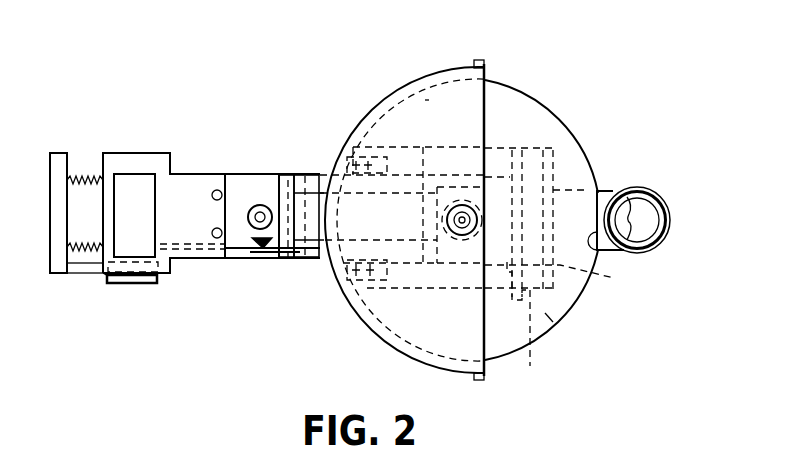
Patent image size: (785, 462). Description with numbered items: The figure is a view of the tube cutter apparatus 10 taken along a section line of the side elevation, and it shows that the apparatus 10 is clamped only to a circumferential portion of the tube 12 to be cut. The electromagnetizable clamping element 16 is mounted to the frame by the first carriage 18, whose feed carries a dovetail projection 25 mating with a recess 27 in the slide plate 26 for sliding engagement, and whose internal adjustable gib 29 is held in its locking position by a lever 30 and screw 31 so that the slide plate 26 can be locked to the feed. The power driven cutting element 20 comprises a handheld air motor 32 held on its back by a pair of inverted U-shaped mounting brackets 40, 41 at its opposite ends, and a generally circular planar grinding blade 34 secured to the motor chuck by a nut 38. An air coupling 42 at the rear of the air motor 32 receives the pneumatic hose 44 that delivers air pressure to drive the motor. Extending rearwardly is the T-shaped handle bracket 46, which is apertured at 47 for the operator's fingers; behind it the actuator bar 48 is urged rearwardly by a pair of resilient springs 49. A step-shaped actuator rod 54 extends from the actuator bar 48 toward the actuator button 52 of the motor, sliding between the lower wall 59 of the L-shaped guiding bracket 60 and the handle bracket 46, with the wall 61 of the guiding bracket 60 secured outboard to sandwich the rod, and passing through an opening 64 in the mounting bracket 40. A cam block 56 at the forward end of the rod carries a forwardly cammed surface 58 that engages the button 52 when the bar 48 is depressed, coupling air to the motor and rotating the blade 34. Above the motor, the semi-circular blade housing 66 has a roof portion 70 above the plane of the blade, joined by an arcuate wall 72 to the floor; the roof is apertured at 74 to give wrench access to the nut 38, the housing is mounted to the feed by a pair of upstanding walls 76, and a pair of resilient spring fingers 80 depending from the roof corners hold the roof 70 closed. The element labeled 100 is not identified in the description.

The tube cutter apparatus 10 is at (319, 42).
The tube 12 is at (663, 200).
The electromagnetizable clamping element 16 is at (607, 187).
The first carriage 18 is at (565, 125).
The power driven cutting element 20 is at (516, 58).
The dovetail projection 25 is at (570, 148).
The slide plate 26 is at (533, 140).
The recess 27 is at (575, 165).
The adjustable gib 29 is at (565, 281).
The lever 30 is at (539, 341).
The screw 31 is at (553, 300).
The air motor 32 is at (398, 152).
The grinding blade 34 is at (550, 318).
The nut 38 is at (460, 238).
The mounting bracket 40 is at (289, 176).
The mounting bracket 41 is at (443, 172).
The air coupling 42 is at (262, 205).
The pneumatic hose 44 is at (257, 210).
The handle bracket 46 is at (158, 146).
The aperture 47 is at (154, 174).
The actuator bar 48 is at (60, 164).
The resilient springs 49 is at (83, 186).
The actuator button 52 is at (307, 236).
The step-shaped actuator rod 54 is at (174, 245).
The cam block 56 is at (258, 250).
The cammed surface 58 is at (265, 253).
The lower wall 59 is at (135, 262).
The L-shaped guiding bracket 60 is at (108, 284).
The wall 61 is at (141, 284).
The opening 64 is at (305, 172).
The blade housing 66 is at (441, 66).
The roof portion 70 is at (427, 100).
The arcuate wall 72 is at (359, 115).
The aperture 74 is at (446, 219).
The upstanding walls 76 is at (375, 160).
The resilient spring fingers 80 is at (480, 59).
The protrusion 100 is at (598, 255).